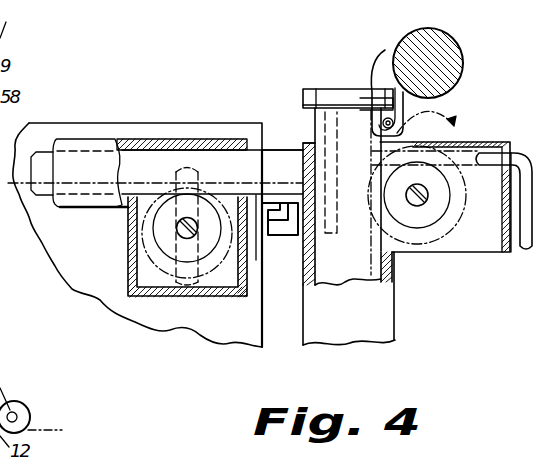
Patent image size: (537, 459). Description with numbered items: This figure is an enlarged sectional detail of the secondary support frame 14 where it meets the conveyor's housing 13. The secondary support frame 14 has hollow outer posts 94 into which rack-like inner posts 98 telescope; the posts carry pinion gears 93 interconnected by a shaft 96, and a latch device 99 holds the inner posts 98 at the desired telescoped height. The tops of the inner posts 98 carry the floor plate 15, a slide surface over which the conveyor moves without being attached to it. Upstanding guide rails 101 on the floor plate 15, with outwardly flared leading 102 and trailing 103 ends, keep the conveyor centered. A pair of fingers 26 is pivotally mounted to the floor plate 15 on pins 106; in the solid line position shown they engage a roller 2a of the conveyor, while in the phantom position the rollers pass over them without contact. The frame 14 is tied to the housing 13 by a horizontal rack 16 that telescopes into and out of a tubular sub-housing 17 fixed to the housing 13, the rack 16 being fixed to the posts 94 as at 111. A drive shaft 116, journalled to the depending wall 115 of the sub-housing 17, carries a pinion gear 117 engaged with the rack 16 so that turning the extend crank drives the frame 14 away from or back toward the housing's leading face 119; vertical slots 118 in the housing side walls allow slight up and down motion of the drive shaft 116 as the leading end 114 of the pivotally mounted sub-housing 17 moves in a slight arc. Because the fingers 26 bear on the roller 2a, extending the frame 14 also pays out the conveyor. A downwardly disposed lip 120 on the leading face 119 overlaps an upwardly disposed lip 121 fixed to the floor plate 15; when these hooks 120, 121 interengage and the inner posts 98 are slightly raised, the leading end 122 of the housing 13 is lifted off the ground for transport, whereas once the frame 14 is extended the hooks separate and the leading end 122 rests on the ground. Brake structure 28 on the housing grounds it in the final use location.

The roller 2a is at (462, 48).
The housing 13 is at (98, 121).
The secondary support frame 14 is at (398, 318).
The floor plate 15 is at (347, 88).
The rack 16 is at (215, 163).
The sub-housing 17 is at (83, 208).
The fingers 26 is at (382, 66).
The brake structure 28 is at (283, 254).
The pinion gear 93 is at (453, 252).
The hollow post 94 is at (396, 277).
The shaft 96 is at (428, 197).
The inner post 98 is at (341, 273).
The latch device 99 is at (521, 153).
The guide rail 101 is at (328, 97).
The leading end 102 is at (382, 90).
The trailing end 103 is at (303, 98).
The pin 106 is at (395, 123).
The fixing location of racks to posts 111 is at (303, 146).
The leading end of sub-housing 114 is at (145, 139).
The depending wall 115 is at (148, 296).
The drive shaft 116 is at (178, 229).
The pinion gear 117 is at (213, 298).
The vertical slot 118 is at (188, 300).
The leading face 119 is at (262, 340).
The downwardly disposed lip 120 is at (275, 207).
The upwardly disposed lip 121 is at (310, 252).
The leading end of housing 122 is at (257, 72).